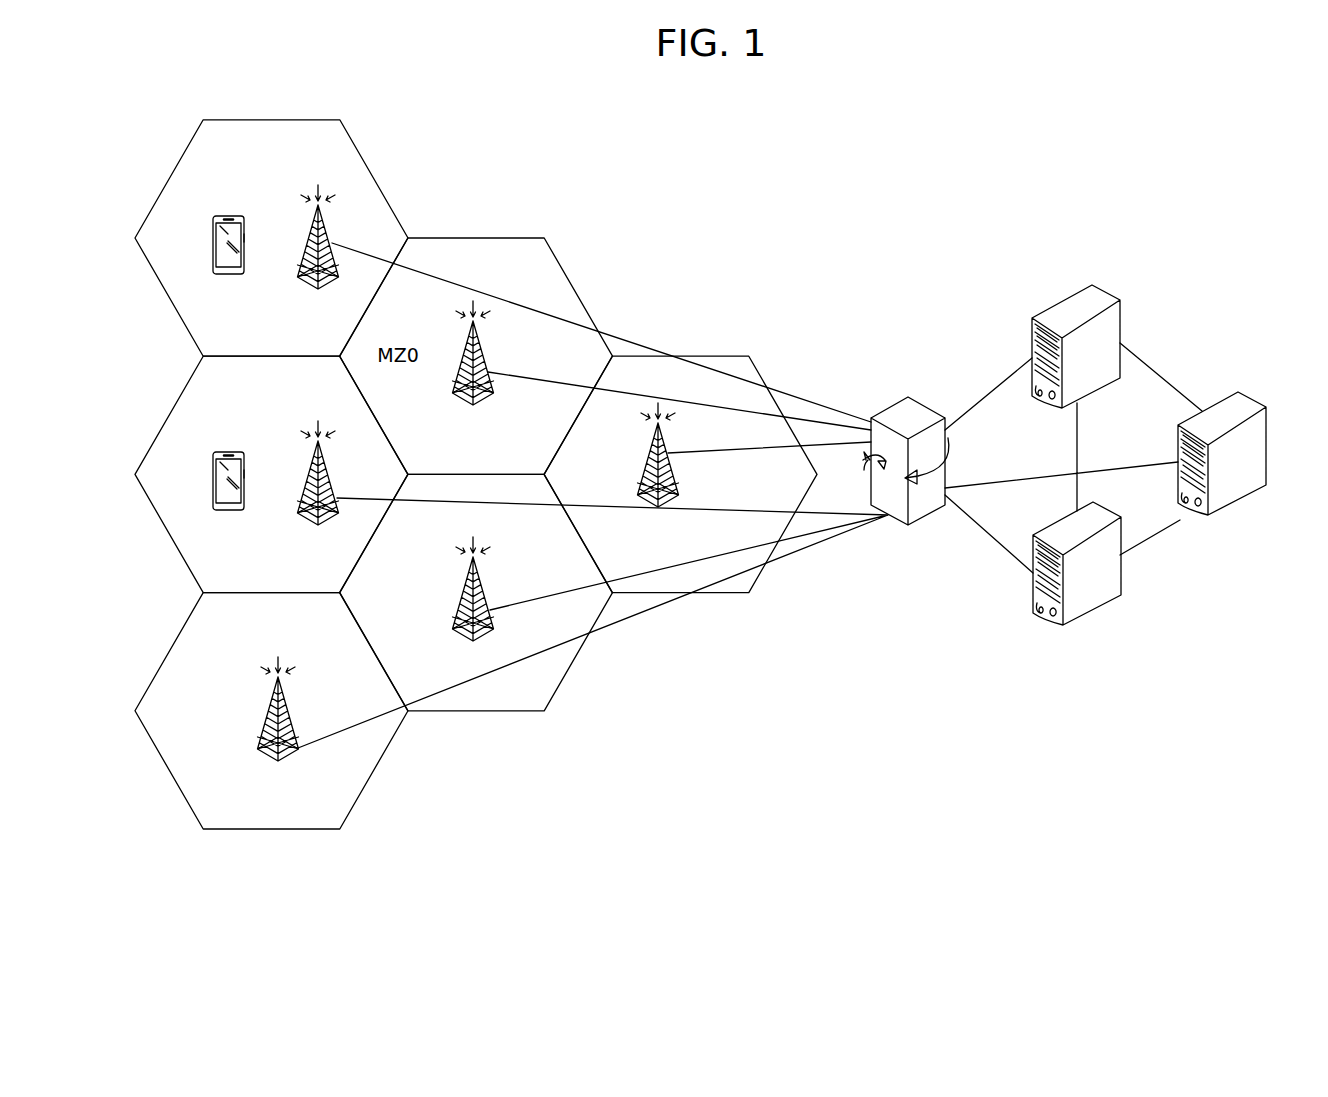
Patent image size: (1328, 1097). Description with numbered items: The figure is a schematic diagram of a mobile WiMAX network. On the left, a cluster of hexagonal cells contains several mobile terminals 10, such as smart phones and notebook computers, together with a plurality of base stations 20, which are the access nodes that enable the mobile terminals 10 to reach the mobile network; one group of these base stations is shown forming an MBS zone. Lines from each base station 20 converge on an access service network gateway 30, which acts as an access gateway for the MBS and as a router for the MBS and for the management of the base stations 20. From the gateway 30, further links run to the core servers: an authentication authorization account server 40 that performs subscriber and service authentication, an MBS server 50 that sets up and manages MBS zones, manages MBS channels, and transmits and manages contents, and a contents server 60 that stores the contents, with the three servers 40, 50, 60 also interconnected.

The mobile terminal 10 is at (229, 213).
The base station 20 is at (327, 225).
The access service network gateway (ASN-GW) 30 is at (890, 398).
The authentication authorization account (AAA) server 40 is at (1252, 490).
The MBS server 50 is at (1100, 386).
The contents server 60 is at (1103, 603).